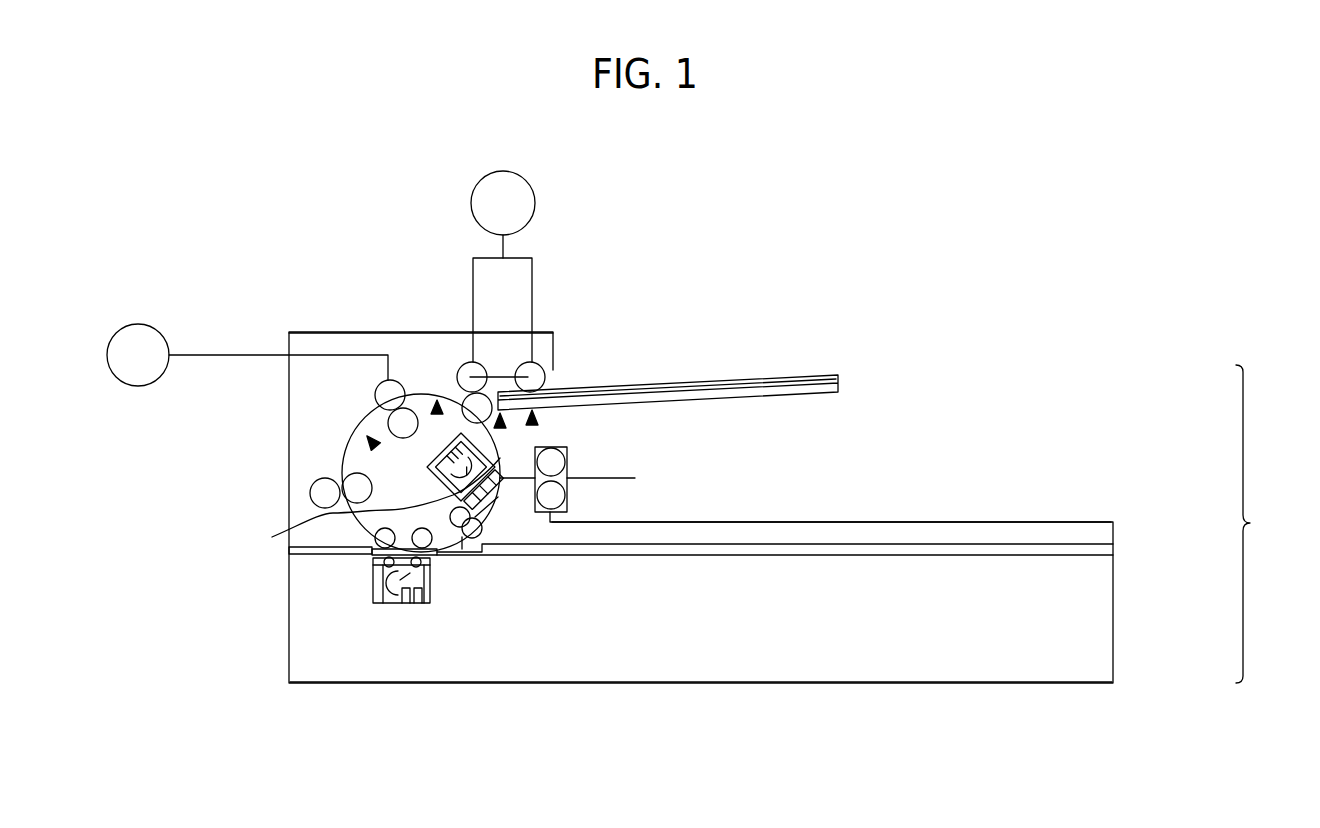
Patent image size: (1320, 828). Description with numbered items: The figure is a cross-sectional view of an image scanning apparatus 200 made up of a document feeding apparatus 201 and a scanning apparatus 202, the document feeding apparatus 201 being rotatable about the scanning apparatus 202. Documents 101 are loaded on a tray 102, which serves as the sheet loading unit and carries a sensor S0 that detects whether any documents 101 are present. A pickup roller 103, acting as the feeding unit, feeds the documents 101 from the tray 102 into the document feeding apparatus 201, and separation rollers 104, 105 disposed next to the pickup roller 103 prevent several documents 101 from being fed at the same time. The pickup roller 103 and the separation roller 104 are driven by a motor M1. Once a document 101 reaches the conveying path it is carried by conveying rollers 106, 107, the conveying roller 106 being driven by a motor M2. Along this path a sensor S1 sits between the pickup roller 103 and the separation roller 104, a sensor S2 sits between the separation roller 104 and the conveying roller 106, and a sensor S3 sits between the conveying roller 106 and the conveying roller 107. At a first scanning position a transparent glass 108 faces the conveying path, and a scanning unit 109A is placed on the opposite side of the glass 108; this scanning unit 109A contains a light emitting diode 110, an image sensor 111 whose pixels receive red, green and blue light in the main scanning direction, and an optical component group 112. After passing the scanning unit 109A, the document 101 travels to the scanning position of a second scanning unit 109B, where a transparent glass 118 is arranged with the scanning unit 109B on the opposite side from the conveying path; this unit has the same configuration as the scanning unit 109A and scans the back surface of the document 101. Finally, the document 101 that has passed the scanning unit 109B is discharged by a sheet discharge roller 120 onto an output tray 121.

The document 101 is at (732, 378).
The tray 102 is at (802, 390).
The pickup roller 103 is at (540, 365).
The separation roller 104 is at (468, 363).
The separation roller 105 is at (440, 396).
The conveying roller 106 is at (375, 393).
The conveying roller 107 is at (310, 490).
The transparent glass 108 is at (370, 557).
The scanning unit 109A is at (377, 587).
The scanning unit 109B is at (500, 458).
The light emitting diode (LED) 110 is at (428, 567).
The image sensor 111 is at (420, 603).
The optical component group 112 is at (423, 582).
The transparent glass 118 is at (366, 504).
The sheet discharge roller 120 is at (566, 495).
The output tray 121 is at (950, 520).
The image scanning apparatus 200 is at (1266, 524).
The document feeding apparatus 201 is at (1126, 458).
The scanning apparatus 202 is at (1126, 592).
The motor M1 is at (503, 266).
The motor M2 is at (247, 355).
The sensor S0 is at (547, 423).
The sensor S1 is at (503, 434).
The sensor S2 is at (438, 423).
The sensor S3 is at (381, 454).